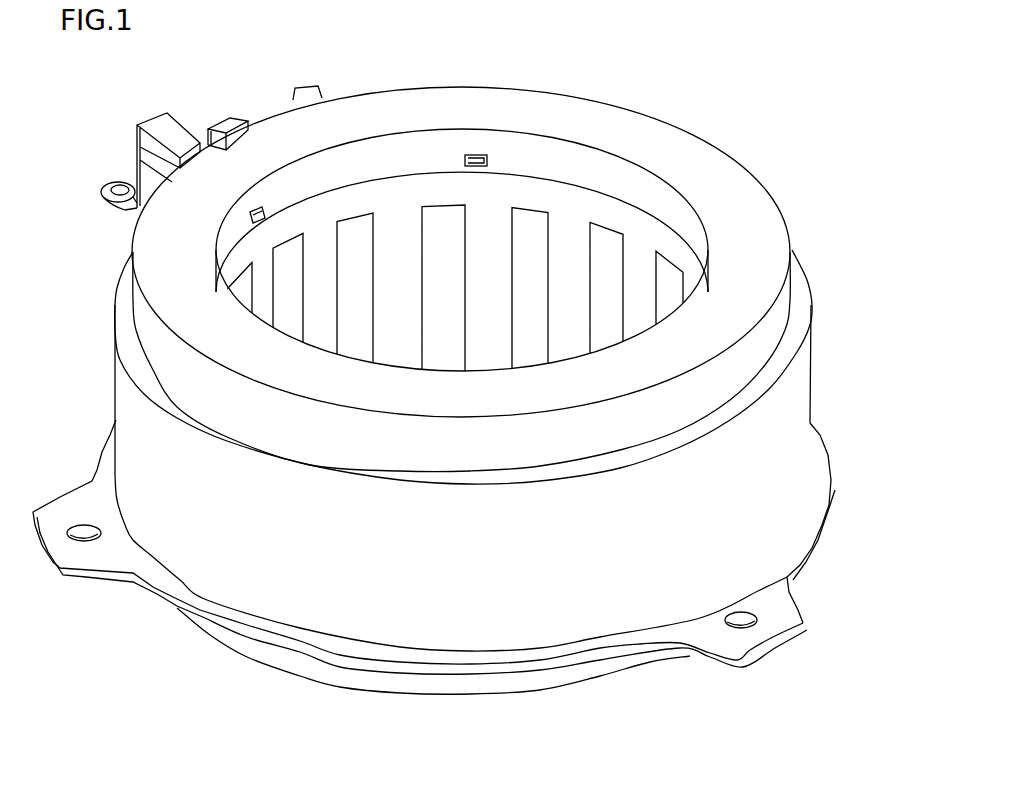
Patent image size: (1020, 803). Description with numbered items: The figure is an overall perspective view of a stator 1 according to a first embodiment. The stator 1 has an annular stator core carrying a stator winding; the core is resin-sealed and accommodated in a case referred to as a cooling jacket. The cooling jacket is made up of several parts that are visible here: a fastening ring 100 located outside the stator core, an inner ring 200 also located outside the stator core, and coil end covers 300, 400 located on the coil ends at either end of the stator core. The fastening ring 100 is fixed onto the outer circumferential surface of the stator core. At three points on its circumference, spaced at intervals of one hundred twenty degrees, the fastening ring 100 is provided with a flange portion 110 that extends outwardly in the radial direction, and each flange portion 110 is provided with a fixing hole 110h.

The stator 1 is at (716, 78).
The fastening ring 100 is at (548, 595).
The flange portion 110 is at (93, 552).
The fixing hole 110h is at (82, 522).
The inner ring 200 is at (497, 223).
The coil end cover 300 is at (627, 130).
The coil end cover 400 is at (458, 688).